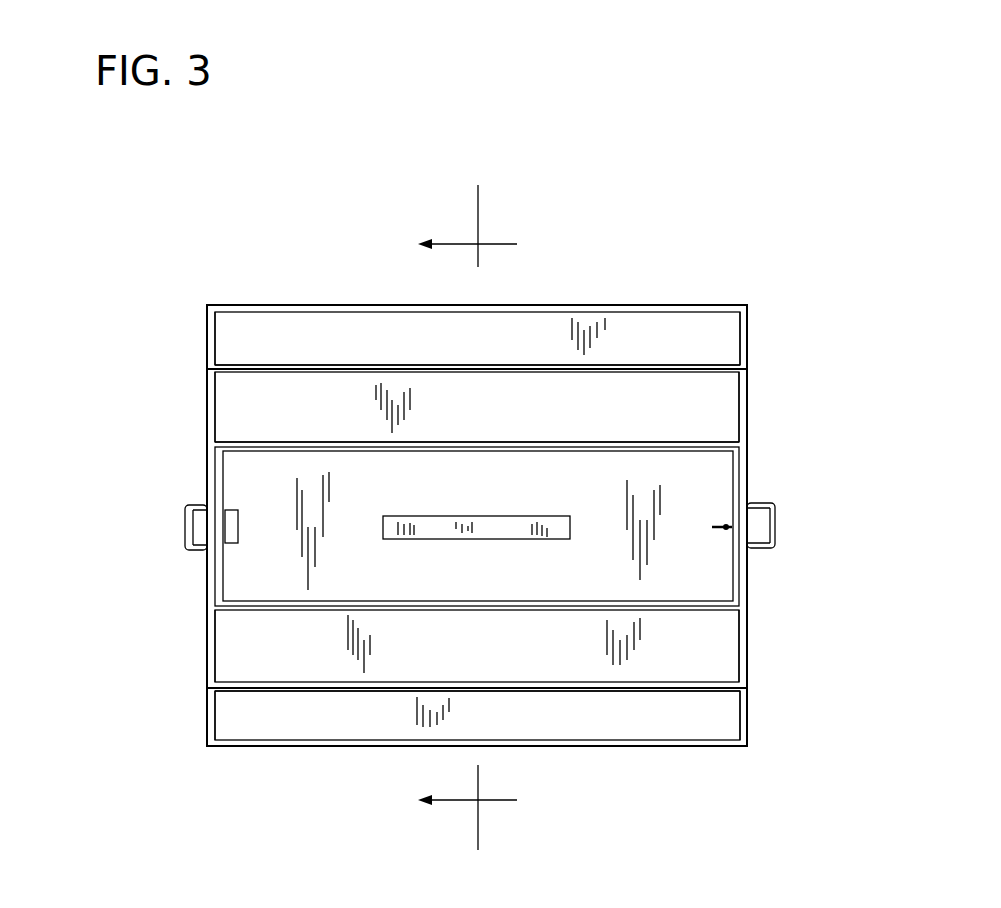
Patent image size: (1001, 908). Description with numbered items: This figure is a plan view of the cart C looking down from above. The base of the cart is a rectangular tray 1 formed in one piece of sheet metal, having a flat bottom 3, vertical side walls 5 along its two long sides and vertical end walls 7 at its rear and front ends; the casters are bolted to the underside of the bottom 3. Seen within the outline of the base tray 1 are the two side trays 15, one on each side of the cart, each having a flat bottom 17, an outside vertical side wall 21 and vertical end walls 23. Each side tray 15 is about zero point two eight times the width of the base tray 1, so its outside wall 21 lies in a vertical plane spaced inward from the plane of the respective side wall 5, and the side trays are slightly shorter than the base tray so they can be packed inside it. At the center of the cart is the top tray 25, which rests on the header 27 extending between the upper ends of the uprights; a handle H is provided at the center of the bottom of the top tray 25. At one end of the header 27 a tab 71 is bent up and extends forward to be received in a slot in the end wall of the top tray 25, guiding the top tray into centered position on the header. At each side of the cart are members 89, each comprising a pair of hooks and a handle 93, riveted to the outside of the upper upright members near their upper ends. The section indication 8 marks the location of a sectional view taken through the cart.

The rectangular tray 1 is at (200, 750).
The cart C is at (755, 295).
The flat bottom 3 is at (292, 335).
The vertical side walls 5 is at (354, 305).
The vertical end walls 7 is at (207, 333).
The section line 8 is at (467, 517).
The side trays 15 is at (518, 360).
The flat bottom 17 is at (650, 385).
The outside vertical side wall 21 is at (468, 363).
The vertical end walls 23 is at (207, 403).
The top tray 25 is at (343, 432).
The header 27 is at (612, 448).
The tab 71 is at (233, 510).
The members 89 is at (180, 523).
The handle 93 is at (190, 507).
The handle H is at (496, 516).